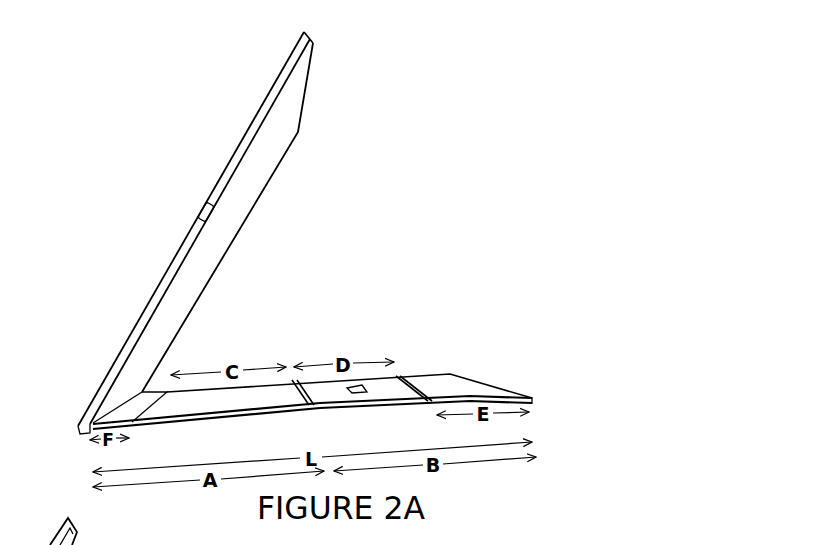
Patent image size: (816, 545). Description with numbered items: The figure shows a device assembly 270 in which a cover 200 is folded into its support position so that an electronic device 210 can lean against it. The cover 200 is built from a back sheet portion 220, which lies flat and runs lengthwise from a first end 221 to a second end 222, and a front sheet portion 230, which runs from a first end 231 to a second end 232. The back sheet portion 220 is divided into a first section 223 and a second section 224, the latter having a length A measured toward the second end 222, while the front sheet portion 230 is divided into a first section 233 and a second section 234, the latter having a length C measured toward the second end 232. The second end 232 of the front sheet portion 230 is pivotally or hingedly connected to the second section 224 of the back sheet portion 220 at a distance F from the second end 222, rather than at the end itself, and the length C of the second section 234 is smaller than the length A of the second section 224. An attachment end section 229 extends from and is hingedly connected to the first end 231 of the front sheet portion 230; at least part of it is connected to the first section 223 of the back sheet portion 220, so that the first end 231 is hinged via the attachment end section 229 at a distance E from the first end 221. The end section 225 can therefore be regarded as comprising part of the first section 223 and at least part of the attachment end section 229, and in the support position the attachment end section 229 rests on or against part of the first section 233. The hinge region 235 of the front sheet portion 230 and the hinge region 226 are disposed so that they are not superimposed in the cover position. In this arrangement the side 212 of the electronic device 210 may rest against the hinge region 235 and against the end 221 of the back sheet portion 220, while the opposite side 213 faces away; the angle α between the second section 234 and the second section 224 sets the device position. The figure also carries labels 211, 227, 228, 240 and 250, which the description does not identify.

The cover 200 is at (384, 300).
The electronic device 210 is at (140, 322).
The hinge end of display portion 211 is at (80, 430).
The side of the electronic device 212 is at (250, 172).
The opposite side of the electronic device 213 is at (240, 137).
The back sheet portion 220 is at (230, 417).
The first end of the back sheet portion 221 is at (532, 399).
The second end of the back sheet portion 222 is at (100, 439).
The first section of the back sheet portion 223 is at (382, 413).
The second section of the back sheet portion 224 is at (180, 421).
The end section 225 is at (482, 388).
The hinge region 226 is at (324, 404).
The hinge region of base 227 is at (132, 428).
The fold edge of base 228 is at (423, 409).
The attachment end section 229 is at (440, 385).
The front sheet portion 230 is at (277, 397).
The first end of the front sheet portion 231 is at (427, 386).
The second end of the front sheet portion 232 is at (148, 393).
The first section of the front sheet portion 233 is at (376, 388).
The second section of the front sheet portion 234 is at (199, 397).
The hinge region of the front sheet portion 235 is at (295, 383).
The hinge 240 is at (82, 435).
The input element 250 is at (358, 384).
The device assembly 270 is at (196, 163).